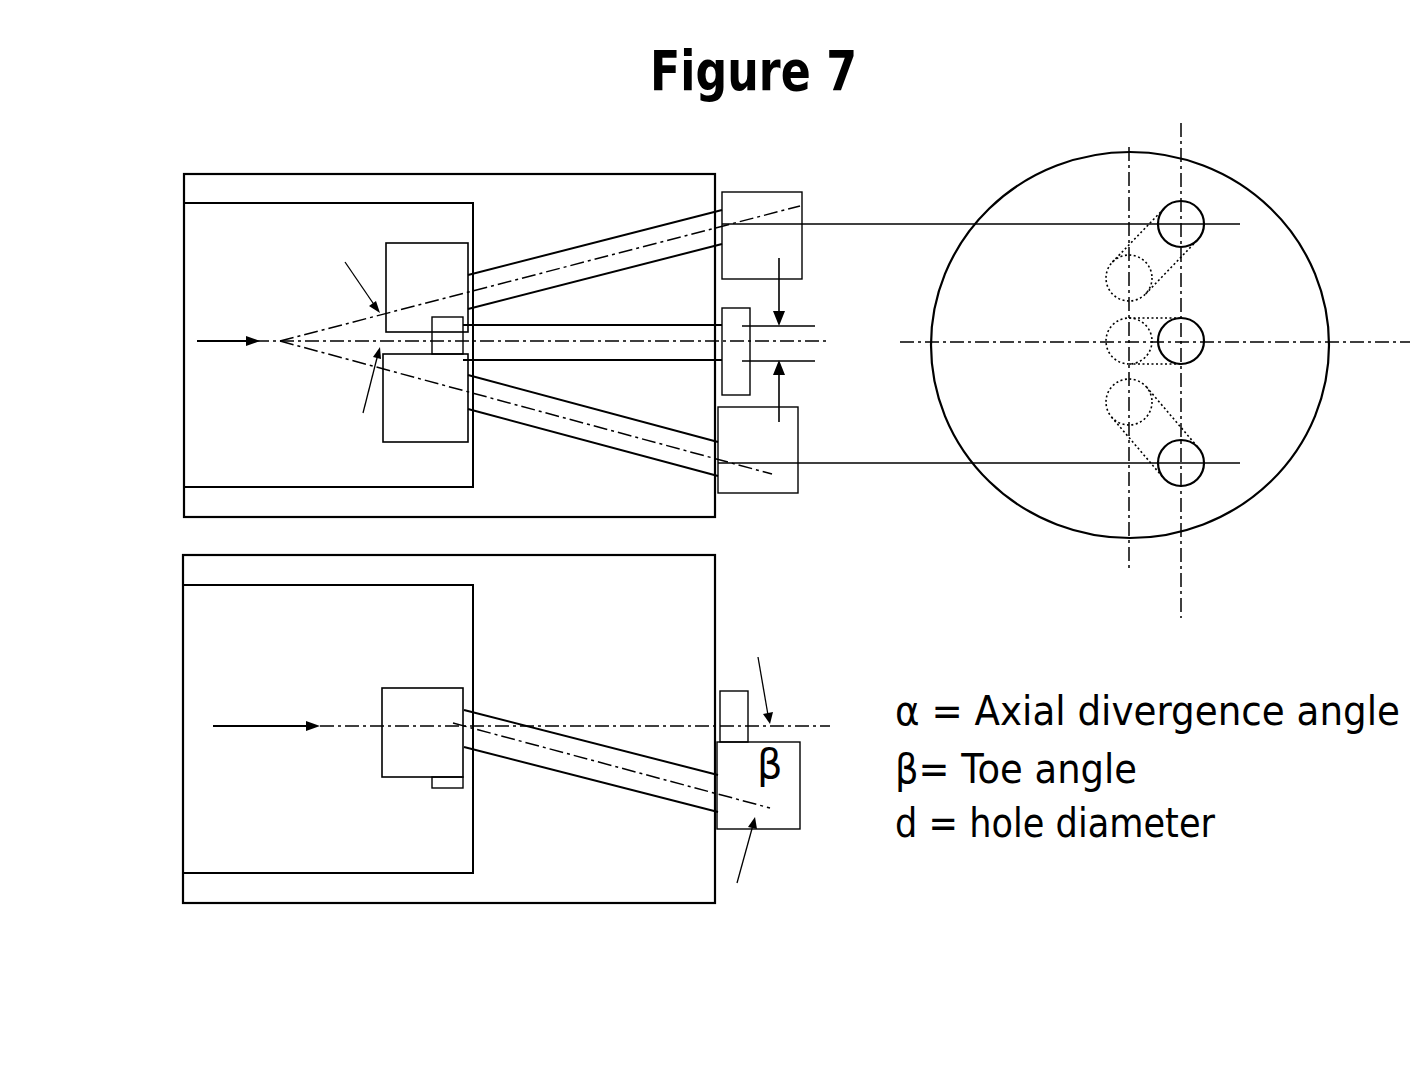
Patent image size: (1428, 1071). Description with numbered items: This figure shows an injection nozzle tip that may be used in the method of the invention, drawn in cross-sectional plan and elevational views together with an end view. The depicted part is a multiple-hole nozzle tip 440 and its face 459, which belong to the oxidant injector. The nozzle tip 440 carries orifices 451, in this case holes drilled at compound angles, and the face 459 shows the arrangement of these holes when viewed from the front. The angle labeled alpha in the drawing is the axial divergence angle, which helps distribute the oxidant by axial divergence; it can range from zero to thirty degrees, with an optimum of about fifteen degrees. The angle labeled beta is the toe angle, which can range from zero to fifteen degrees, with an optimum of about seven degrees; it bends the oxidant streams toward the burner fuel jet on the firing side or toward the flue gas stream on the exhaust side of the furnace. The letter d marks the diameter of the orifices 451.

The multiple-hole nozzle tip 440 is at (526, 174).
The orifices 451 is at (722, 210).
The face 459 is at (717, 500).